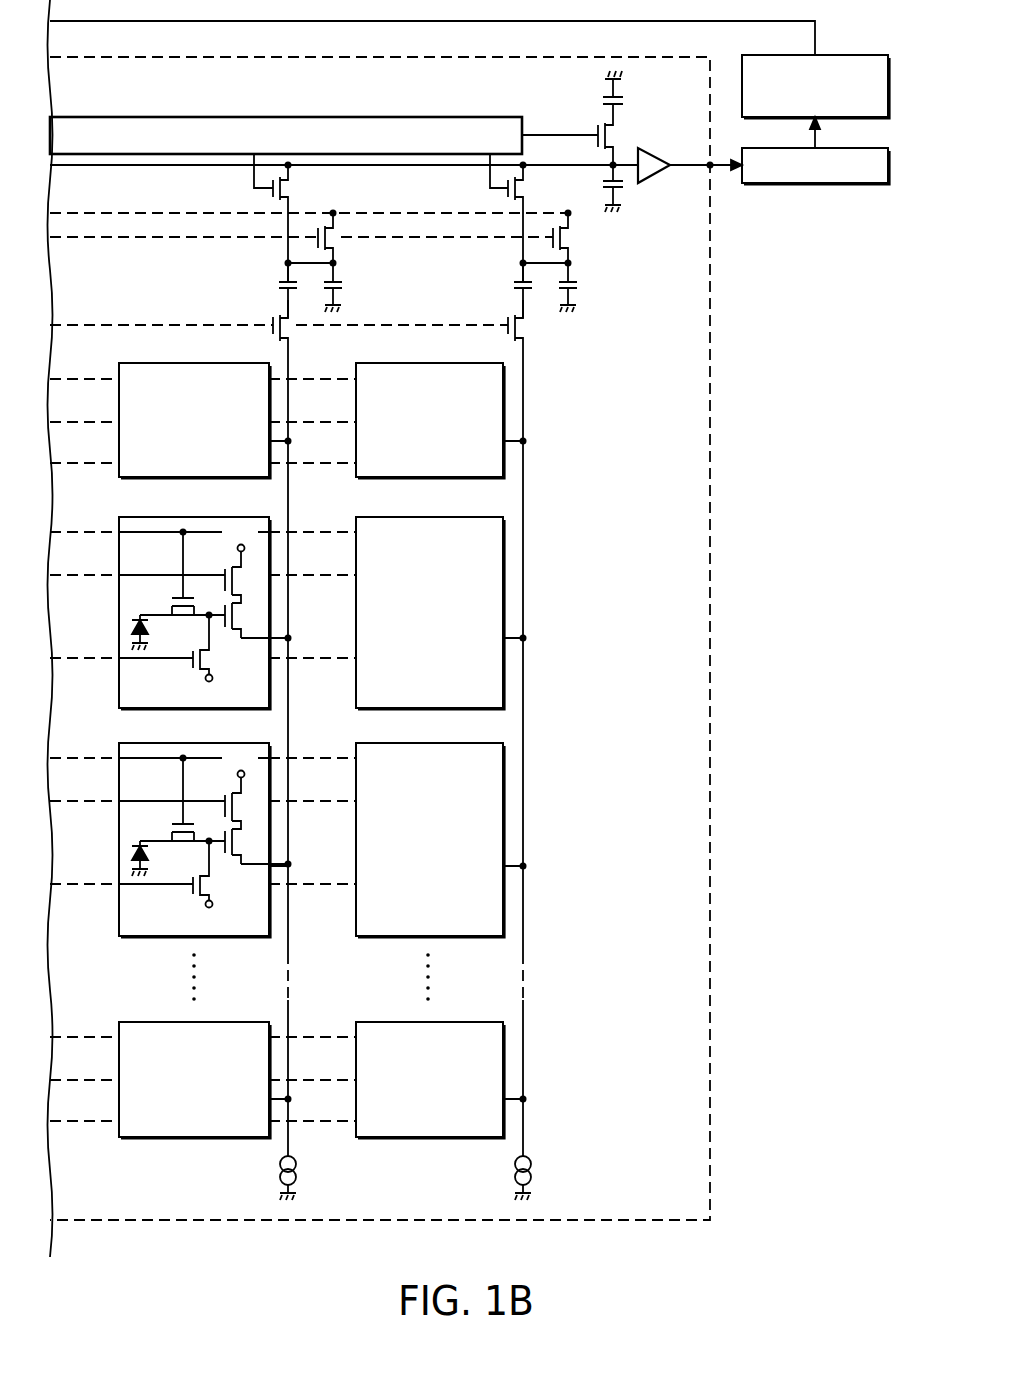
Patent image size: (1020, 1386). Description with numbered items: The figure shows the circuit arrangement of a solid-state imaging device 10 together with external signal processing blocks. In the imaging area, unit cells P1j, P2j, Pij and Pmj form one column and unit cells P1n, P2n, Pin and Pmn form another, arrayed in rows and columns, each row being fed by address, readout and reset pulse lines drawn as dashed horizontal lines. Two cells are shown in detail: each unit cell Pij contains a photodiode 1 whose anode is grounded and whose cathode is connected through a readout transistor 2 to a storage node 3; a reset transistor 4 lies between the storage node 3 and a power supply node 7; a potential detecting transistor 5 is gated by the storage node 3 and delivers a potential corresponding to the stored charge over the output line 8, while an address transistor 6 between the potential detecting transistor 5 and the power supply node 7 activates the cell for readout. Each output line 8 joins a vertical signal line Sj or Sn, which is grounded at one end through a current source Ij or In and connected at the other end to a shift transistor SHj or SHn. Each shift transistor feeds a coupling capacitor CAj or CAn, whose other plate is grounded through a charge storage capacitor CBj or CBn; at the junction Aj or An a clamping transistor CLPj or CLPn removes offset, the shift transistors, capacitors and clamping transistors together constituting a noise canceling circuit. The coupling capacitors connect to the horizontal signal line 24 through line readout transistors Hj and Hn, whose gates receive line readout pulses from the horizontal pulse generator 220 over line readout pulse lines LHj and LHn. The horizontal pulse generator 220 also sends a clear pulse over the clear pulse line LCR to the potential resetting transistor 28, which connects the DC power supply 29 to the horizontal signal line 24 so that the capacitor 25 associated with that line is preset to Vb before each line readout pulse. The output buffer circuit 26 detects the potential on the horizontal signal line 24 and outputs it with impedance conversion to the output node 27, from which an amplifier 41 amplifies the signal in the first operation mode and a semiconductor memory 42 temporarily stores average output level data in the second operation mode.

The photodiode 1 is at (170, 853).
The readout transistor 2 is at (170, 827).
The storage node 3 is at (212, 834).
The reset transistor 4 is at (188, 892).
The potential detecting transistor 5 is at (251, 853).
The address transistor 6 is at (251, 830).
The power supply node 7 is at (239, 898).
The output line 8 is at (248, 867).
The solid-state imaging device 10 is at (712, 885).
The horizontal signal line 24 is at (590, 169).
The capacitor 25 is at (630, 186).
The output buffer circuit 26 is at (664, 158).
The output node 27 is at (712, 168).
The potential resetting transistor 28 is at (616, 133).
The DC power supply 29 is at (628, 101).
The amplifier 41 is at (847, 148).
The semiconductor memory 42 is at (847, 55).
The horizontal pulse generator 220 is at (393, 117).
The line readout transistor Hj is at (284, 218).
The line readout transistor Hn is at (523, 218).
The line readout pulse line LHj is at (253, 172).
The line readout pulse line LHn is at (490, 172).
The clear pulse line LCR is at (527, 126).
The clamping transistor CLPj is at (340, 241).
The clamping transistor CLPn is at (572, 240).
The junction Aj is at (338, 262).
The junction An is at (519, 263).
The coupling capacitor CAj is at (268, 290).
The charge storage capacitor CBj is at (352, 287).
The coupling capacitor CAn is at (503, 290).
The charge storage capacitor CBn is at (591, 287).
The shift transistor SHj is at (292, 337).
The shift transistor SHn is at (527, 337).
The unit cell P1j is at (220, 363).
The unit cell P1n is at (455, 363).
The unit cell P2j is at (220, 517).
The unit cell P2n is at (455, 517).
The unit cell Pij is at (220, 743).
The unit cell Pin is at (455, 743).
The unit cell Pmj is at (220, 1022).
The unit cell Pmn is at (455, 1022).
The vertical signal line Sj is at (286, 1152).
The vertical signal line Sn is at (521, 1152).
The current source Ij is at (300, 1172).
The current source In is at (535, 1172).